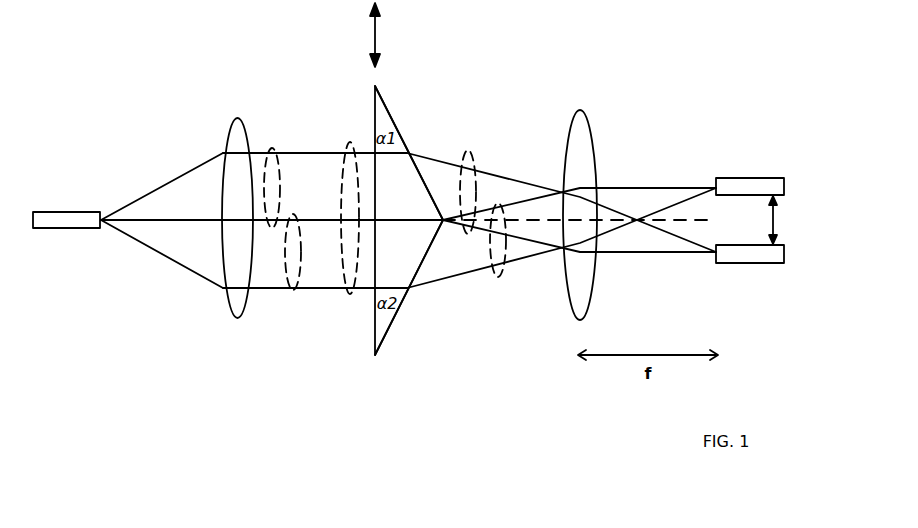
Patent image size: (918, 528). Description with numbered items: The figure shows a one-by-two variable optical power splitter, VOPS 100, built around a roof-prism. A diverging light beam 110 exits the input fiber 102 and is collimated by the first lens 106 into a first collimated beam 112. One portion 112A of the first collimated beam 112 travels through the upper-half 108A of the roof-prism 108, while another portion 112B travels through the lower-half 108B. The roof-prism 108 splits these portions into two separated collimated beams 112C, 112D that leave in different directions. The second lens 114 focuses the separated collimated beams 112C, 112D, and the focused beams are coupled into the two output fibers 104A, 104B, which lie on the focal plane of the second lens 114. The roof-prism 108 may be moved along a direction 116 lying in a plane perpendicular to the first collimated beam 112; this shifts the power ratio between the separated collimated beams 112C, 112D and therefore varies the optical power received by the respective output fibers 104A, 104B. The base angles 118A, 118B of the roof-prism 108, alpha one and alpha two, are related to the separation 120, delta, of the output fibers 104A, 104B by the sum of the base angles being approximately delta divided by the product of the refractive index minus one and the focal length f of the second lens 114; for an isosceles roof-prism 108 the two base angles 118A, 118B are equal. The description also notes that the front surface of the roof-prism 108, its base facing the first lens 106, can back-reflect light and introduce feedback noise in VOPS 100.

The VOPS 100 is at (195, 46).
The input fiber 102 is at (52, 210).
The output fiber 104A is at (768, 178).
The output fiber 104B is at (768, 263).
The first lens 106 is at (236, 121).
The roof-prism 108 is at (406, 145).
The upper-half 108A is at (380, 202).
The lower-half 108B is at (380, 239).
The diverging light beam 110 is at (198, 165).
The first collimated beam 112 is at (350, 294).
The portion 112A is at (275, 146).
The portion 112B is at (293, 291).
The separated collimated beam 112C is at (471, 158).
The separated collimated beam 112D is at (498, 278).
The second lens 114 is at (579, 123).
The direction 116 is at (377, 43).
The base angle 118A is at (386, 118).
The base angle 118B is at (384, 320).
The separation 120 is at (775, 226).